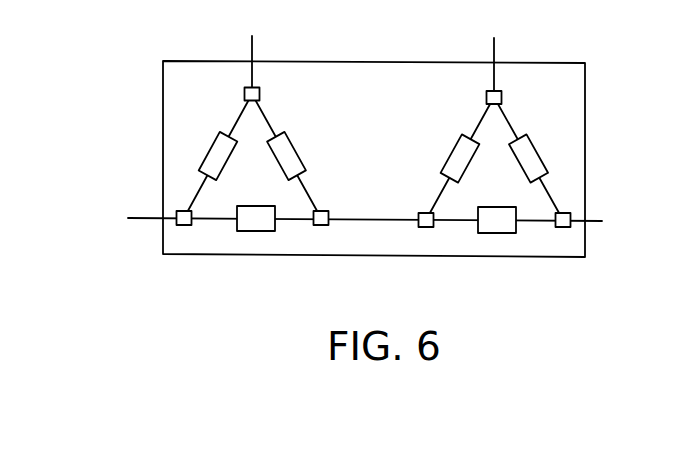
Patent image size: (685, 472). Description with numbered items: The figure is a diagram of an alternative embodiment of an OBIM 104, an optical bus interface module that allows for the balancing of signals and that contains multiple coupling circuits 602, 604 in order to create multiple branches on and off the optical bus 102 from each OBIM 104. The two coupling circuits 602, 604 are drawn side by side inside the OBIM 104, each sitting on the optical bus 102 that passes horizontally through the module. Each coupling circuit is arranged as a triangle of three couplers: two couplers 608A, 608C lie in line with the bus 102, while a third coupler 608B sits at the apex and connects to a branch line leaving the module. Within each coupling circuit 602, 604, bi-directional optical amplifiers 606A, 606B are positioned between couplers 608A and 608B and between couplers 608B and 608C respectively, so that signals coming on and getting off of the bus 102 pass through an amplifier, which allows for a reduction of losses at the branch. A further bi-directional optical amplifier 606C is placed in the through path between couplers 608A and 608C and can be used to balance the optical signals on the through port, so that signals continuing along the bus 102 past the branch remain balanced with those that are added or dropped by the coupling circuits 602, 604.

The optical bus 102 is at (143, 216).
The OBIM 104 is at (553, 34).
The coupling circuit 602 is at (217, 232).
The coupling circuit 604 is at (462, 235).
The bi-directional optical amplifier 606A is at (202, 153).
The bi-directional optical amplifier 606B is at (304, 156).
The bi-directional optical amplifier 606C is at (259, 229).
The coupler 608A is at (189, 231).
The coupler 608B is at (278, 97).
The coupler 608C is at (322, 229).